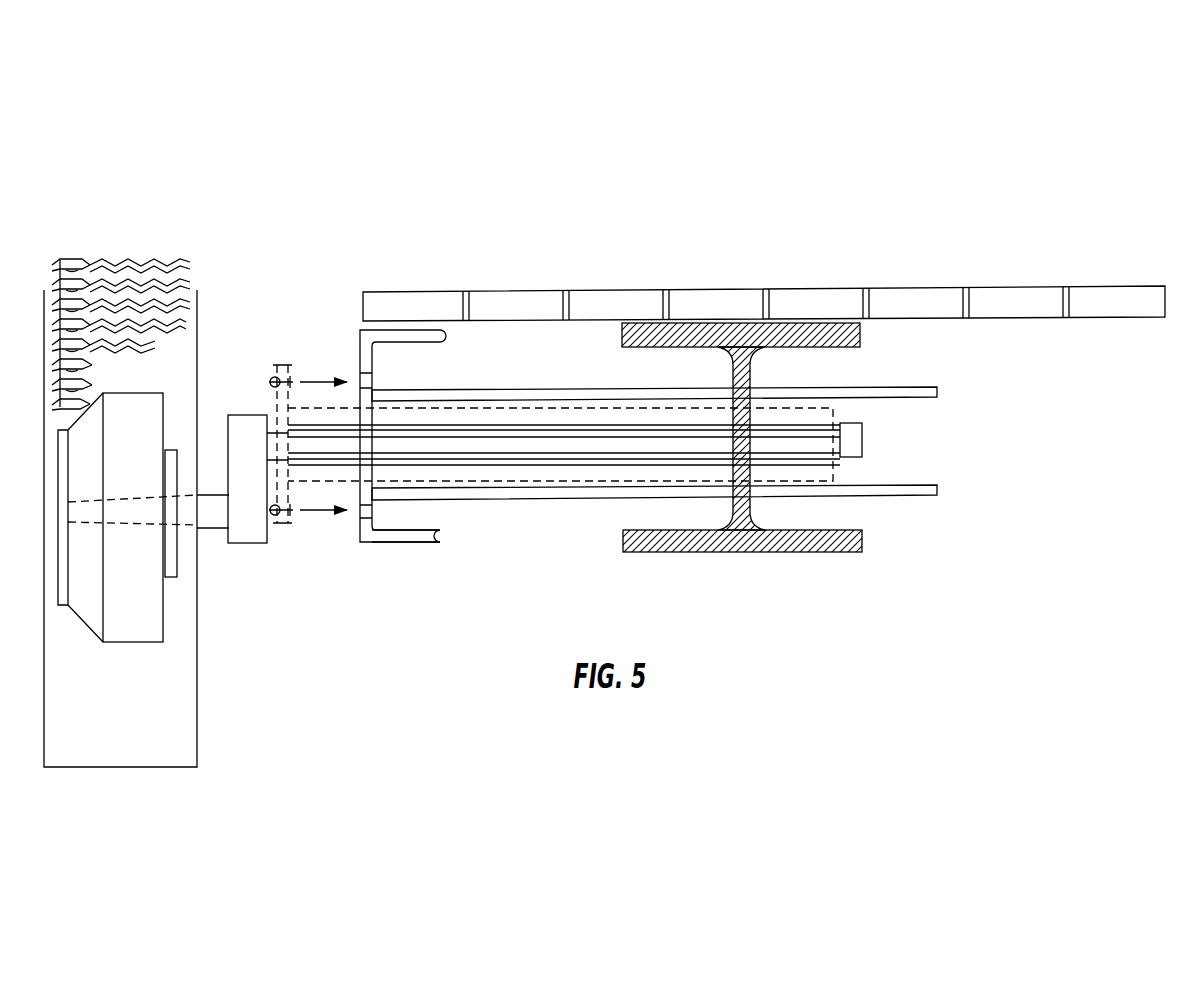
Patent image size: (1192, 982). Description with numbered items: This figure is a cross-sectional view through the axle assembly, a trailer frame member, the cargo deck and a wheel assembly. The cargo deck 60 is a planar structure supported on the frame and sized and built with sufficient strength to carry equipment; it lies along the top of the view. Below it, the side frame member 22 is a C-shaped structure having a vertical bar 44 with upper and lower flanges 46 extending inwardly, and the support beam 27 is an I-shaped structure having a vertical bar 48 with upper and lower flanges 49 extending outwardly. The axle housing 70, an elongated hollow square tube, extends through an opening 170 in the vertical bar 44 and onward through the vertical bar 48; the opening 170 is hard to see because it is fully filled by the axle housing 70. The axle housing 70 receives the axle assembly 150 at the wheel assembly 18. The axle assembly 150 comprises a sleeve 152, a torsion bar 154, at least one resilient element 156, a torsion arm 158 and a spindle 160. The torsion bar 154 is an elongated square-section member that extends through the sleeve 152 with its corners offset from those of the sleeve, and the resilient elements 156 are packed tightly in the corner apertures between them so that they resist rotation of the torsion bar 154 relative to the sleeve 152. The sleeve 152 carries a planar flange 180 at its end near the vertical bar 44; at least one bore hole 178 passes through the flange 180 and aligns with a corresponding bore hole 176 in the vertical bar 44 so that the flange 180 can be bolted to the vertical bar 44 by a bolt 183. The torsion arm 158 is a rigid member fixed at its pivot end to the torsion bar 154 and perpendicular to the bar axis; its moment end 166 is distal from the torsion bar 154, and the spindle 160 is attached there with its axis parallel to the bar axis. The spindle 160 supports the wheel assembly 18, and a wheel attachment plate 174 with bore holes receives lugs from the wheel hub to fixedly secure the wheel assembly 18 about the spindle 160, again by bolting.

The wheel assembly 18 is at (152, 252).
The side frame member 22 is at (405, 547).
The support beam 27 is at (848, 549).
The vertical bar 44 is at (361, 523).
The upper and lower flanges 46 is at (386, 336).
The vertical bar 48 is at (744, 510).
The upper and lower flanges 49 is at (682, 340).
The cargo deck 60 is at (903, 303).
The axle housing 70 is at (915, 490).
The axle assembly 150 is at (434, 393).
The sleeve 152 is at (507, 482).
The torsion bar 154 is at (852, 437).
The resilient element 156 is at (814, 462).
The torsion arm 158 is at (242, 424).
The spindle 160 is at (140, 526).
The moment end 166 is at (242, 556).
The opening 170 is at (757, 497).
The wheel attachment plate 174 is at (175, 565).
The bore hole 176 is at (373, 510).
The bore hole 178 is at (290, 380).
The flange 180 is at (278, 528).
The bolt 183 is at (272, 378).